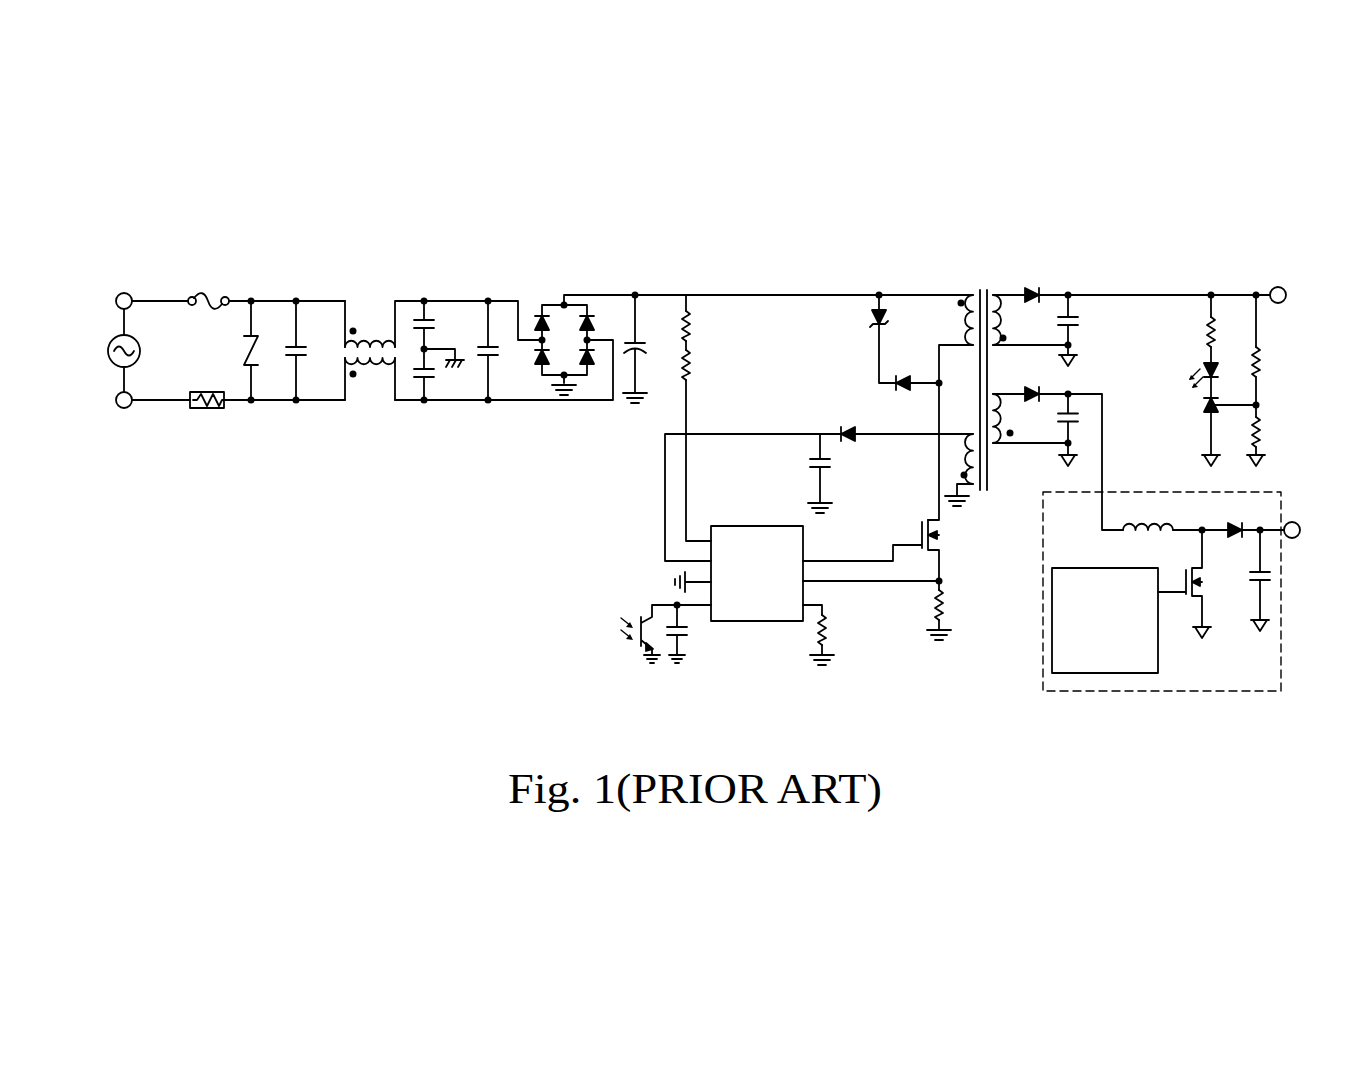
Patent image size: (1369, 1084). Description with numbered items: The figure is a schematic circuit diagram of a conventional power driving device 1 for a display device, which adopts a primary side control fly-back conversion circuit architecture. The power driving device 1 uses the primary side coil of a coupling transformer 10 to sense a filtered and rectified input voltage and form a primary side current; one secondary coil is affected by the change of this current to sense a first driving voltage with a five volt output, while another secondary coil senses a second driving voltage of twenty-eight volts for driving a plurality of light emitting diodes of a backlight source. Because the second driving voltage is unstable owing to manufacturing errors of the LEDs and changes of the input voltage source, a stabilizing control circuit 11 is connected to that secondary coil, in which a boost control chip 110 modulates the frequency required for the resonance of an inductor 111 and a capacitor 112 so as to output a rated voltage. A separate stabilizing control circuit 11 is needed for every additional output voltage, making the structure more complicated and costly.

The power driving device 1 is at (187, 220).
The coupling transformer 10 is at (990, 283).
The stabilizing control circuit 11 is at (1283, 497).
The boost control chip 110 is at (1077, 566).
The inductor 111 is at (1175, 512).
The capacitor 112 is at (1270, 571).